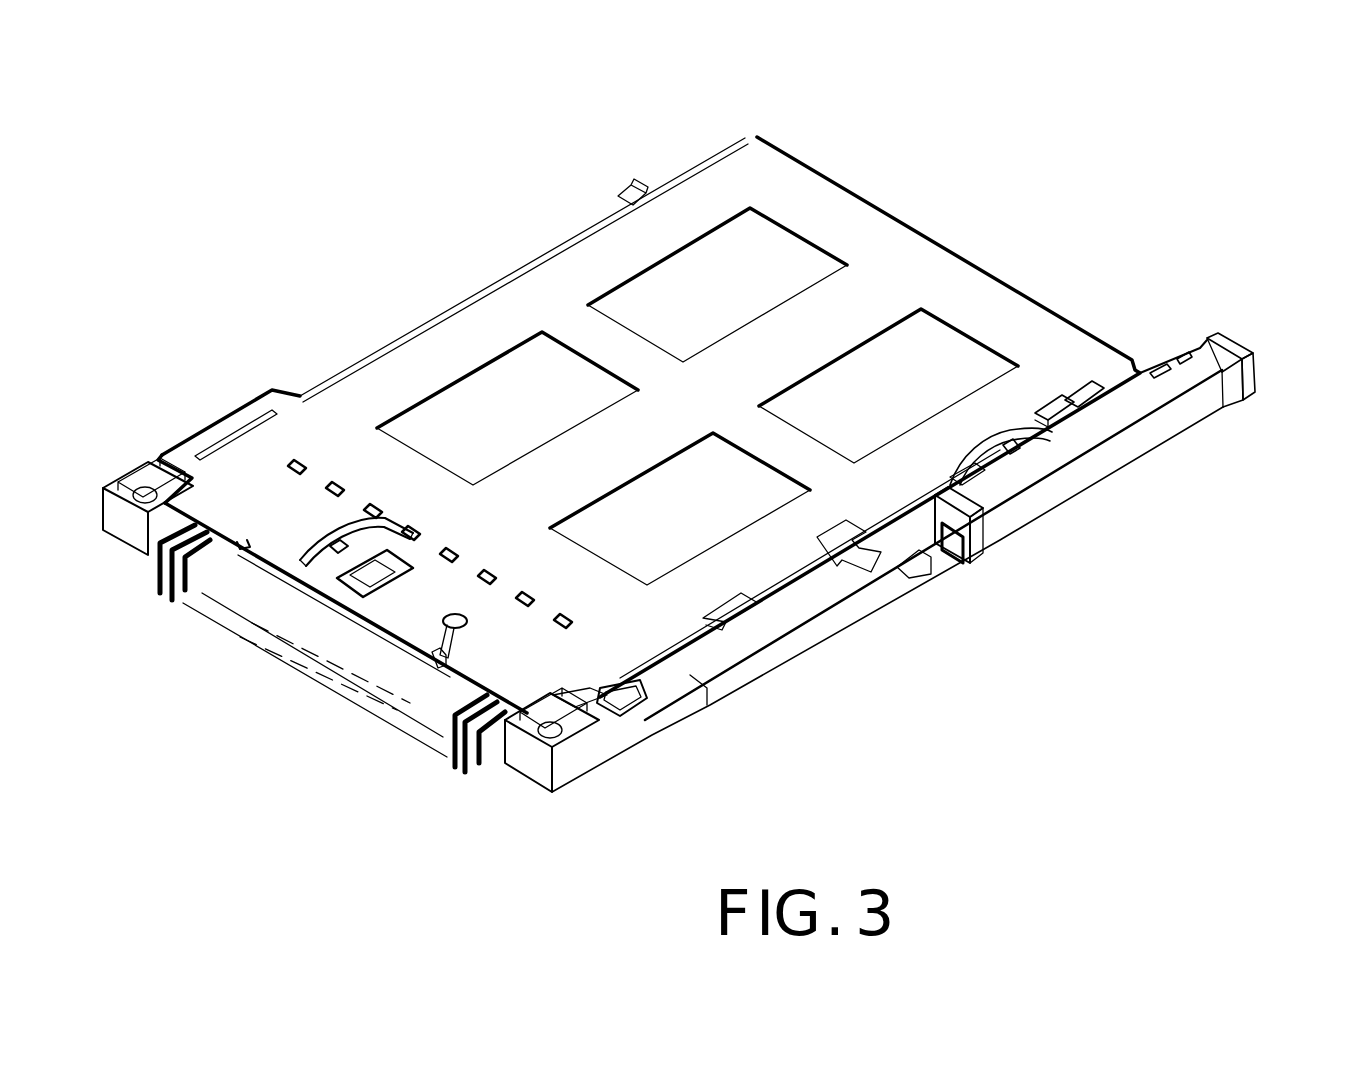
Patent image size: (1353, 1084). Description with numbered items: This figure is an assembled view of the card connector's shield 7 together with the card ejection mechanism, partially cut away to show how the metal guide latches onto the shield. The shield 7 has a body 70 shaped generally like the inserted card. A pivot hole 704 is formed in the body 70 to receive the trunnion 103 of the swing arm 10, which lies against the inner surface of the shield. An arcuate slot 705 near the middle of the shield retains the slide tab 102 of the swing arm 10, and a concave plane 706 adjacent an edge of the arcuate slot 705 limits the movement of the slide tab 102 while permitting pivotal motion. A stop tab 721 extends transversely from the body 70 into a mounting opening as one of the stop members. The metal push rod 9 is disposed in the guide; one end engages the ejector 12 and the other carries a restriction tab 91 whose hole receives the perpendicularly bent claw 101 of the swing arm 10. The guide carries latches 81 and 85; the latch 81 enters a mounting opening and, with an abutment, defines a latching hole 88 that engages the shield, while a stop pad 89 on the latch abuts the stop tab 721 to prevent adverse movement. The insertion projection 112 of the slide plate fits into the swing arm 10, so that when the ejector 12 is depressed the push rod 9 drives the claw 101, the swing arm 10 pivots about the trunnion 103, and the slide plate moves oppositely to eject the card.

The shield 7 is at (567, 277).
The body 70 is at (905, 255).
The arcuate slot 705 is at (413, 533).
The concave plane 706 is at (342, 537).
The slide tab 102 is at (337, 550).
The stop tab 721 is at (1085, 398).
The latch 85 is at (1148, 372).
The ejector 12 is at (1232, 392).
The stop pad 89 is at (1013, 452).
The latch 81 is at (993, 462).
The latching hole 88 is at (978, 468).
The push rod 9 is at (735, 643).
The claw 101 is at (616, 702).
The restriction tab 91 is at (634, 735).
The insertion projection 112 is at (348, 596).
The swing arm 10 is at (387, 587).
The trunnion 103 is at (345, 700).
The pivot hole 704 is at (452, 630).